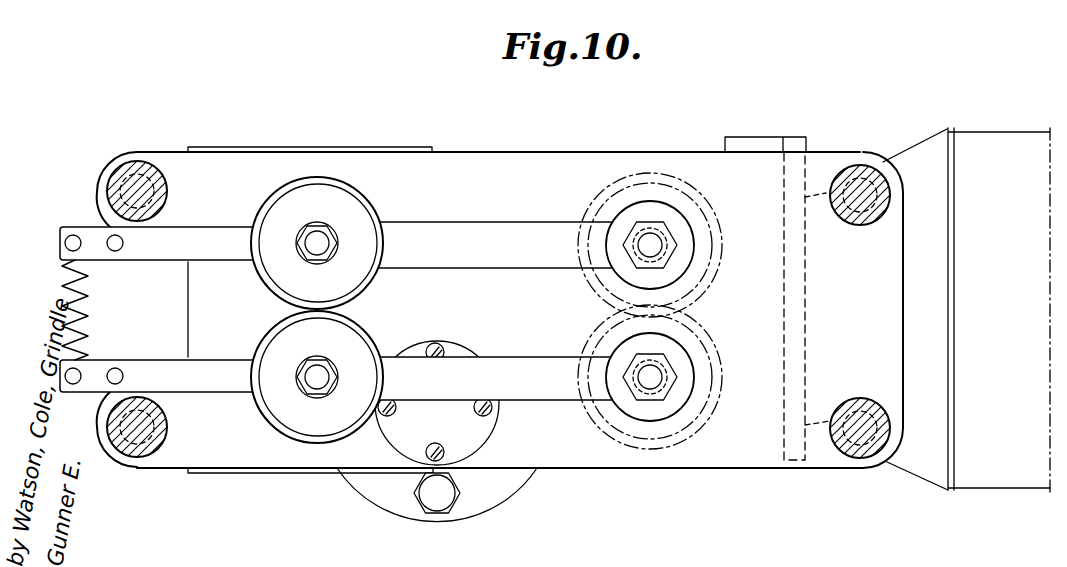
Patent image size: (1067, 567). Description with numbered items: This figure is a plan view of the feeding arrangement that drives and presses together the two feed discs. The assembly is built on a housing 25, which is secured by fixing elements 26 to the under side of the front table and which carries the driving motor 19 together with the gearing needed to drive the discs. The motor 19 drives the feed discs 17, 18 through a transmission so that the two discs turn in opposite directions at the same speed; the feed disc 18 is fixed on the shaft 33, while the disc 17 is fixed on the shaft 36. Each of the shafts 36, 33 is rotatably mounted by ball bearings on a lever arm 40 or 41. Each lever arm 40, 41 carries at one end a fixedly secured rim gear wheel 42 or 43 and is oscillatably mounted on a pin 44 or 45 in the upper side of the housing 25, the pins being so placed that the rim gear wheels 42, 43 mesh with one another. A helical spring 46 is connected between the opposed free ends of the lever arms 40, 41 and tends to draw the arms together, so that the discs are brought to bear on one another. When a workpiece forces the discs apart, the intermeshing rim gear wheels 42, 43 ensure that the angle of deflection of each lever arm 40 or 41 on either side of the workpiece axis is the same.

The feed disc 17 is at (307, 188).
The feed disc 18 is at (402, 447).
The driving motor 19 is at (996, 136).
The housing 25 is at (700, 160).
The fixing elements 26 is at (135, 170).
The shaft 33 is at (321, 374).
The shaft 36 is at (321, 240).
The lever arm 40 is at (218, 233).
The lever arm 41 is at (219, 390).
The rim gear wheel 42 is at (627, 192).
The rim gear wheel 43 is at (695, 410).
The pin 44 is at (670, 242).
The pin 45 is at (670, 372).
The helical spring 46 is at (94, 298).